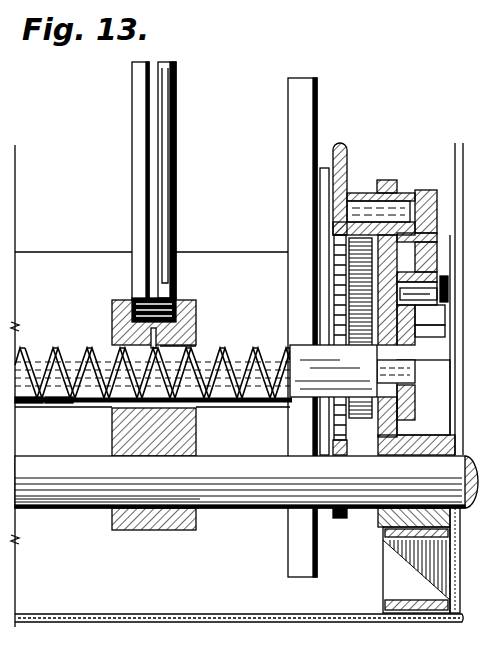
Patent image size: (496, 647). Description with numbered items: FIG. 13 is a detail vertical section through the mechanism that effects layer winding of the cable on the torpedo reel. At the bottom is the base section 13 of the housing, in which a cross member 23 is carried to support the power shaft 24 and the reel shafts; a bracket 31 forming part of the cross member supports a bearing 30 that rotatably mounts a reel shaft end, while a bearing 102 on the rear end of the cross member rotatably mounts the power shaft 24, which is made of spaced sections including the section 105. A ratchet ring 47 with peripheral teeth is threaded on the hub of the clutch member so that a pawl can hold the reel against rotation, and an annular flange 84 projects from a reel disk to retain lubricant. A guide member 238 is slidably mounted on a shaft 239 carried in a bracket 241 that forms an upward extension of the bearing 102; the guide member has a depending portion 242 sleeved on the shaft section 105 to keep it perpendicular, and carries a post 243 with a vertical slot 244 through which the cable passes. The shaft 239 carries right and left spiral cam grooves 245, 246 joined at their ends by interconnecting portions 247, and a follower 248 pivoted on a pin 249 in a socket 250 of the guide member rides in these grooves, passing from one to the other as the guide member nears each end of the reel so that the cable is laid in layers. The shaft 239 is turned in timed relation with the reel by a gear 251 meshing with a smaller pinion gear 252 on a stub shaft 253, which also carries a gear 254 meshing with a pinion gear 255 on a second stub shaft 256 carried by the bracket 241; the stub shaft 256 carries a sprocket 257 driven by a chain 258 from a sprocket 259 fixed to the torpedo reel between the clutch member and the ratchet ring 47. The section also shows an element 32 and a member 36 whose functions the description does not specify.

The base section 13 is at (192, 622).
The cross member 23 is at (393, 585).
The power shaft 24 is at (262, 510).
The bearing 30 is at (450, 366).
The bracket 31 is at (437, 428).
The partition line 32 is at (257, 254).
The vertical bar 36 is at (293, 97).
The ratchet ring 47 is at (358, 412).
The annular flange 84 is at (323, 168).
The bearing 102 is at (380, 518).
The shaft section 105 is at (97, 506).
The guide member 238 is at (131, 302).
The shaft 239 is at (36, 356).
The bracket 241 is at (395, 181).
The depending portion 242 is at (196, 447).
The post 243 is at (176, 75).
The vertical slot 244 is at (146, 100).
The right spiral cam groove 245 is at (22, 405).
The left spiral cam groove 246 is at (50, 405).
The interconnecting portion 247 is at (291, 351).
The follower 248 is at (180, 345).
The pin 249 is at (196, 327).
The socket 250 is at (152, 340).
The gear 251 is at (415, 408).
The pinion gear 252 is at (435, 280).
The stub shaft 253 is at (440, 338).
The gear 254 is at (445, 349).
The pinion gear 255 is at (444, 186).
The stub shaft 256 is at (398, 210).
The sprocket 257 is at (348, 152).
The chain 258 is at (337, 450).
The sprocket 259 is at (338, 518).